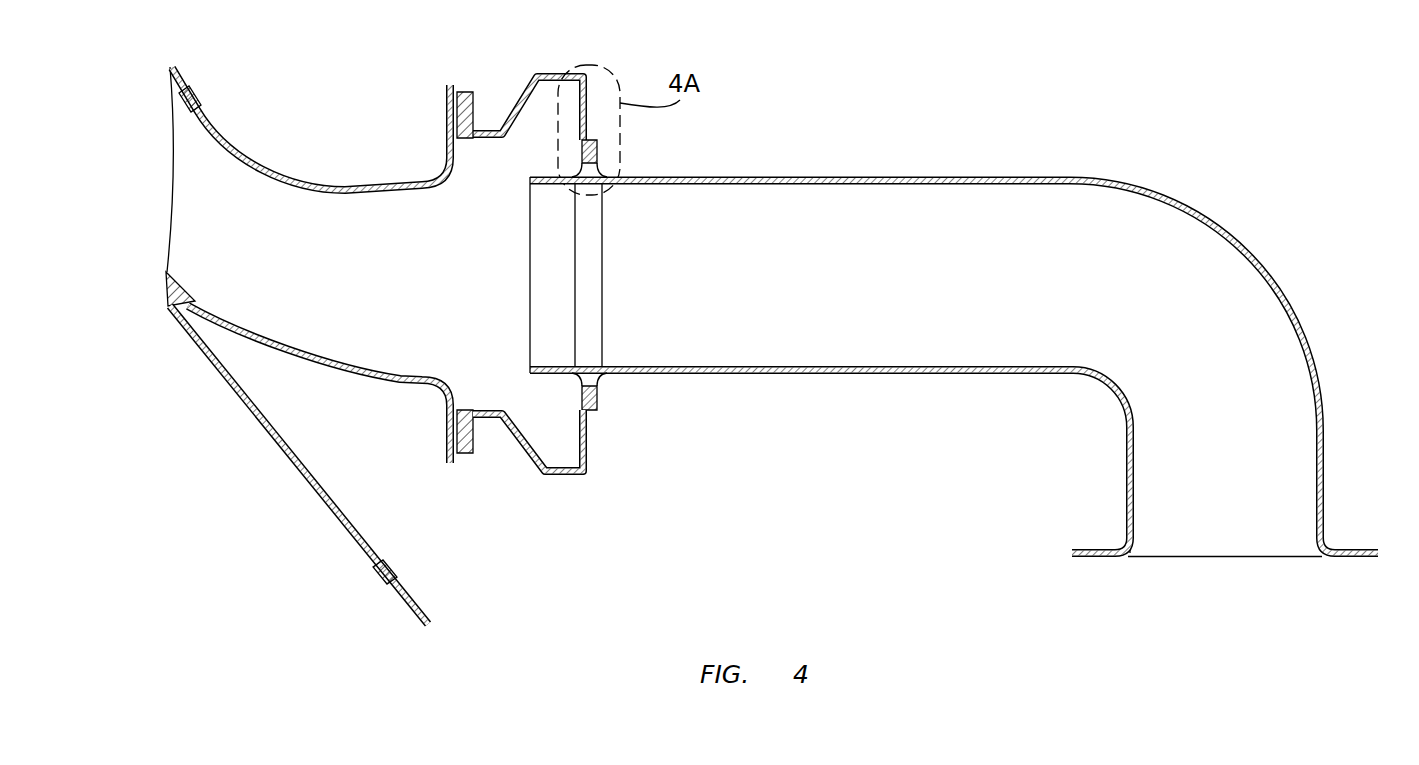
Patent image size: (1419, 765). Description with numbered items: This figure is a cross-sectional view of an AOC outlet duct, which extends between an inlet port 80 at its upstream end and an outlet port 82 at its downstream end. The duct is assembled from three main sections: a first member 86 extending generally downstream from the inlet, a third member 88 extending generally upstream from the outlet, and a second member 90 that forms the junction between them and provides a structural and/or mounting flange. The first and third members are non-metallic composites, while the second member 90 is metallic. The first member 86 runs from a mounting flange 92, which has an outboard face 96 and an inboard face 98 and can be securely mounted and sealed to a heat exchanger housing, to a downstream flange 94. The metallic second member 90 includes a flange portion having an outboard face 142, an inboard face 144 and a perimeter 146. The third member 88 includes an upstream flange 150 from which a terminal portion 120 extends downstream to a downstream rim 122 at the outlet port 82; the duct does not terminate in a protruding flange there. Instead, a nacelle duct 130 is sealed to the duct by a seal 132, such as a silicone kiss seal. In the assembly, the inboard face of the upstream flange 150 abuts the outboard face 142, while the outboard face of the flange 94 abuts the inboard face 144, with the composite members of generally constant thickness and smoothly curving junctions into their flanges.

The inlet port 80 is at (1221, 562).
The outlet port 82 is at (904, 414).
The first member 86 is at (1266, 256).
The third member 88 is at (550, 388).
The second member 90 is at (604, 433).
The mounting flange 92 is at (1358, 557).
The flange 94 is at (595, 401).
The outboard face 96 is at (1093, 556).
The inboard face 98 is at (1093, 548).
The terminal portion 120 is at (548, 377).
The downstream rim 122 is at (530, 265).
The nacelle duct 130 is at (327, 180).
The seal 132 is at (526, 88).
The outboard face 142 is at (574, 478).
The inboard face 144 is at (593, 458).
The perimeter 146 is at (589, 477).
The upstream flange 150 is at (555, 468).